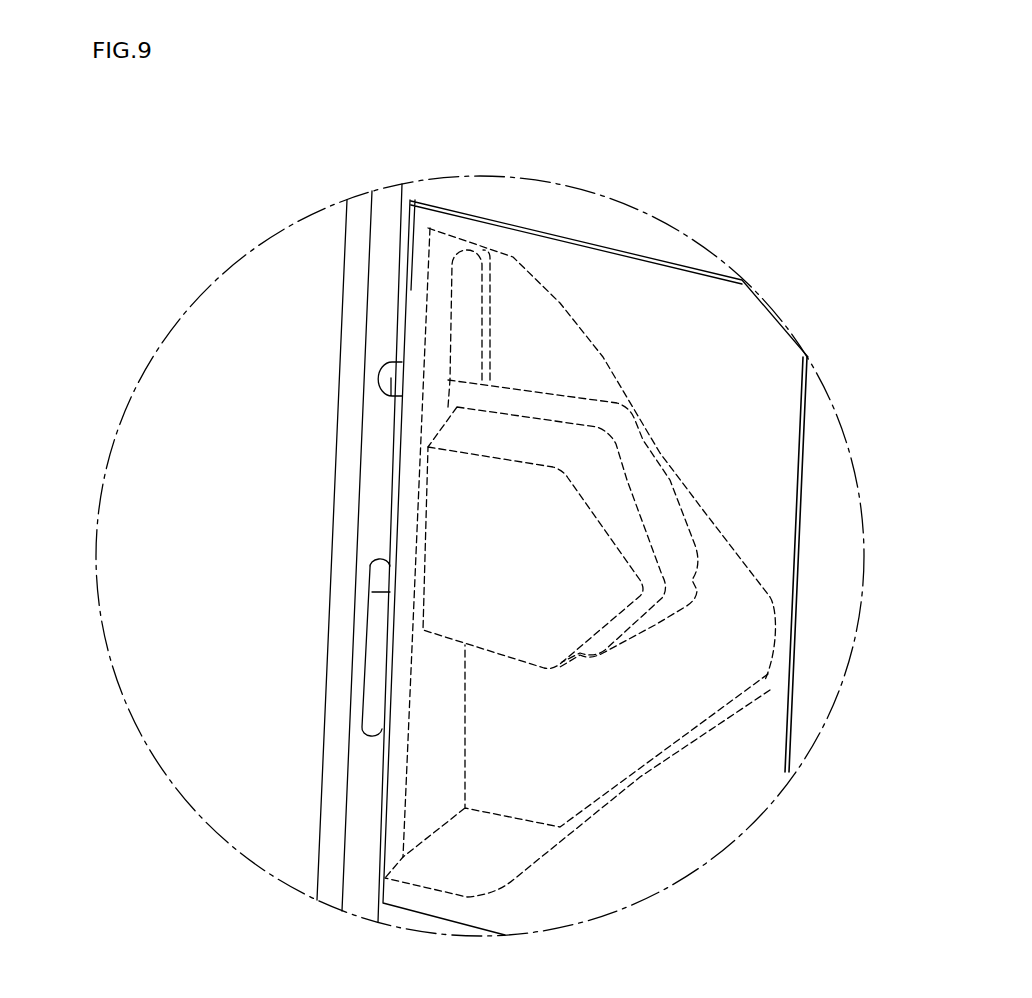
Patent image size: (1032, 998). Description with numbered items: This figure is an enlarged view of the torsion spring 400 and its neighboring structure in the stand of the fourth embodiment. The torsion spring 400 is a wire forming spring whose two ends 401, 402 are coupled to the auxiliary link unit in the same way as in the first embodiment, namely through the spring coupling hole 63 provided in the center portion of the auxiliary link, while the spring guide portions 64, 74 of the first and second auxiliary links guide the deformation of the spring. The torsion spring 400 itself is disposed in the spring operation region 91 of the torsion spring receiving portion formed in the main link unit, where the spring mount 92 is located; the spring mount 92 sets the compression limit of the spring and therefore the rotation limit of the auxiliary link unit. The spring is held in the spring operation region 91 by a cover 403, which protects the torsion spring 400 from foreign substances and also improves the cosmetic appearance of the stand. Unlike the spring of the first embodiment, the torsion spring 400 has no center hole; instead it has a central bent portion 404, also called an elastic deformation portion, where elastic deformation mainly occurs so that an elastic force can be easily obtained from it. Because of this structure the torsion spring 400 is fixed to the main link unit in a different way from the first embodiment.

The spring coupling hole 63 is at (392, 357).
The spring guide portion 64 is at (373, 658).
The spring guide portion 74 is at (495, 250).
The spring operation region 91 is at (540, 332).
The spring mount 92 is at (542, 523).
The torsion spring 400 is at (660, 567).
The end of the torsion spring 401 is at (393, 397).
The end of the torsion spring 402 is at (377, 577).
The cover 403 is at (797, 533).
The central bent portion 404 is at (663, 583).